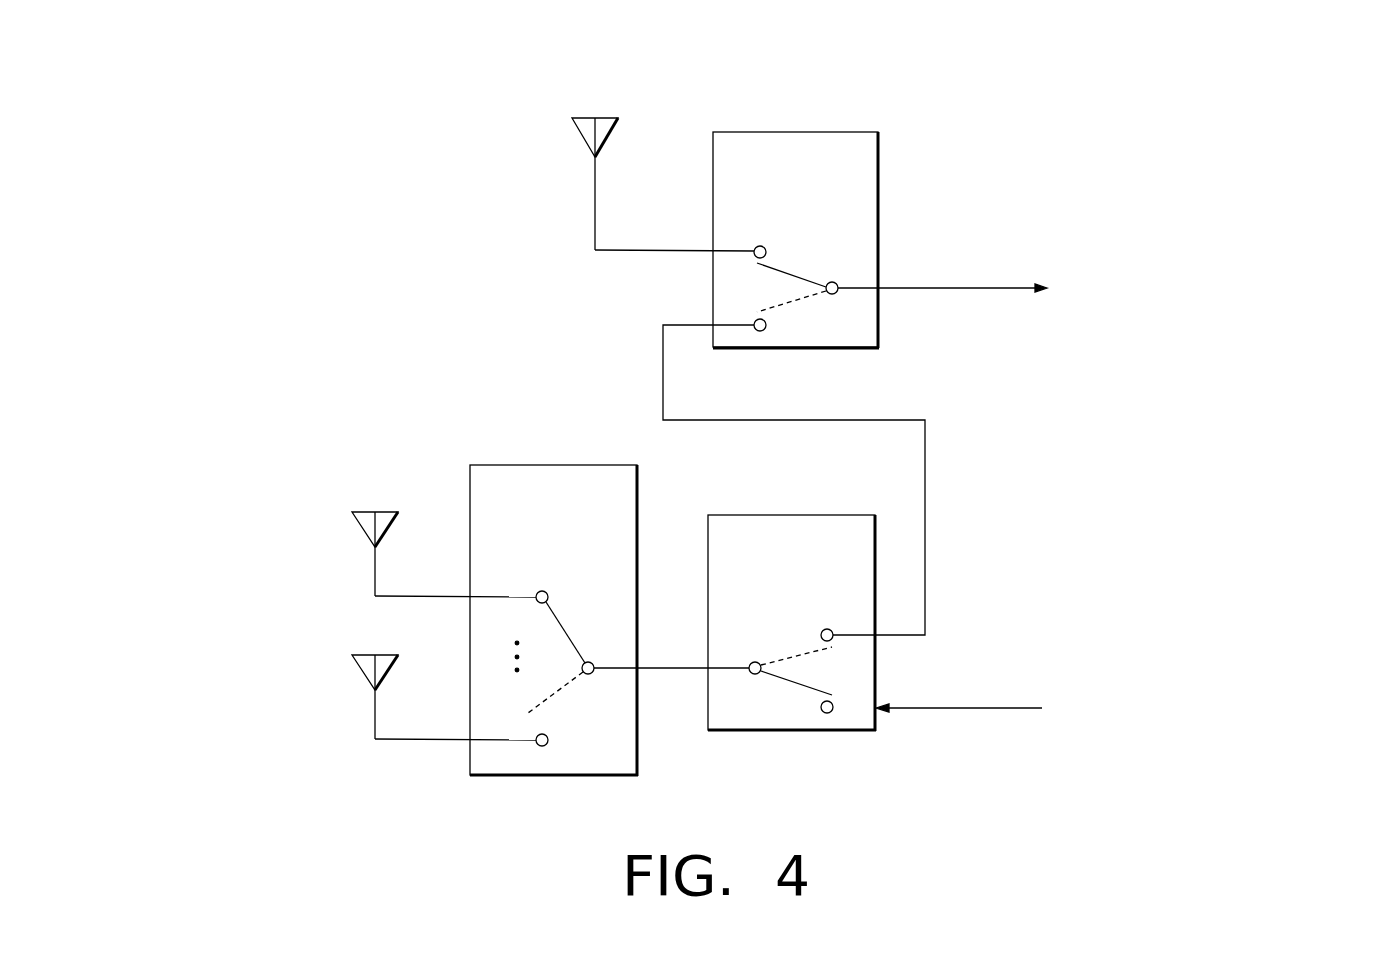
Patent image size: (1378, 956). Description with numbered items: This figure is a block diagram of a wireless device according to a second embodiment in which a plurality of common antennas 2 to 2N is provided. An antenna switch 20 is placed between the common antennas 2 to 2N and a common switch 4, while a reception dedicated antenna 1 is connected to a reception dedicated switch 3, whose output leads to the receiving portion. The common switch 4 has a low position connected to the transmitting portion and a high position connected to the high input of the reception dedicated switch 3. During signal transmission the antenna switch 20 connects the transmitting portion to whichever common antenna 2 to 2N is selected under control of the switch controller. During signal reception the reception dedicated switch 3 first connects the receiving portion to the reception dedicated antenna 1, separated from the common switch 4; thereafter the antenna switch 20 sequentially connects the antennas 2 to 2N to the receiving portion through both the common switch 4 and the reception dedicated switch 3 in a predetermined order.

The reception dedicated antenna 1 is at (586, 118).
The common antenna 2 is at (352, 520).
The common antenna 2N is at (352, 664).
The reception dedicated switch 3 is at (798, 132).
The common switch 4 is at (795, 515).
The antenna switch 20 is at (557, 465).